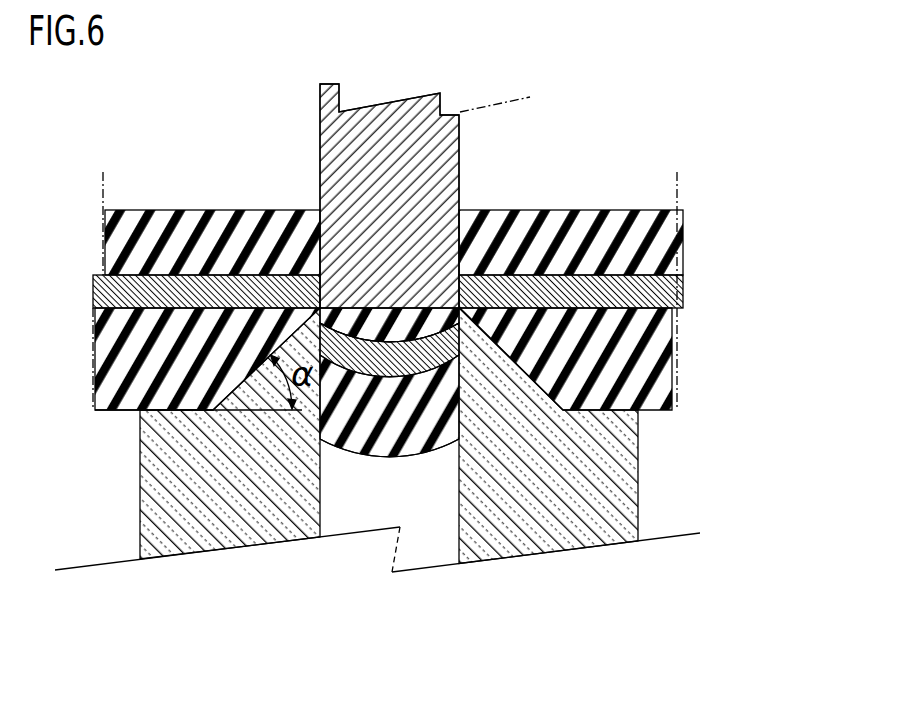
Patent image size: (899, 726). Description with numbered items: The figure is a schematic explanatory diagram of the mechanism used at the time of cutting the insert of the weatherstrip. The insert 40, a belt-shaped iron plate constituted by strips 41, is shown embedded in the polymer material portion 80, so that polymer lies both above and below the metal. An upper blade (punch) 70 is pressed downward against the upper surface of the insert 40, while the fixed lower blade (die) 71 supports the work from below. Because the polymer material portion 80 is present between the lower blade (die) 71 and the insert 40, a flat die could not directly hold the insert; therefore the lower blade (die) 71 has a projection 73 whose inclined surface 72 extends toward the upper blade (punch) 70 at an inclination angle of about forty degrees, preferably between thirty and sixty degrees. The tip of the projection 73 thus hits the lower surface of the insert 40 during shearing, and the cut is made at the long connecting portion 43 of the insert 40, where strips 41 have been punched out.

The upper blade (punch) 70 is at (320, 172).
The polymer material portion 80 is at (647, 235).
The strip 41 is at (642, 293).
The insert 40 is at (479, 271).
The inclined surface 72 is at (517, 358).
The projection 73 is at (490, 390).
The lower blade (die) 71 is at (639, 488).
The long connecting portion 43 is at (394, 362).